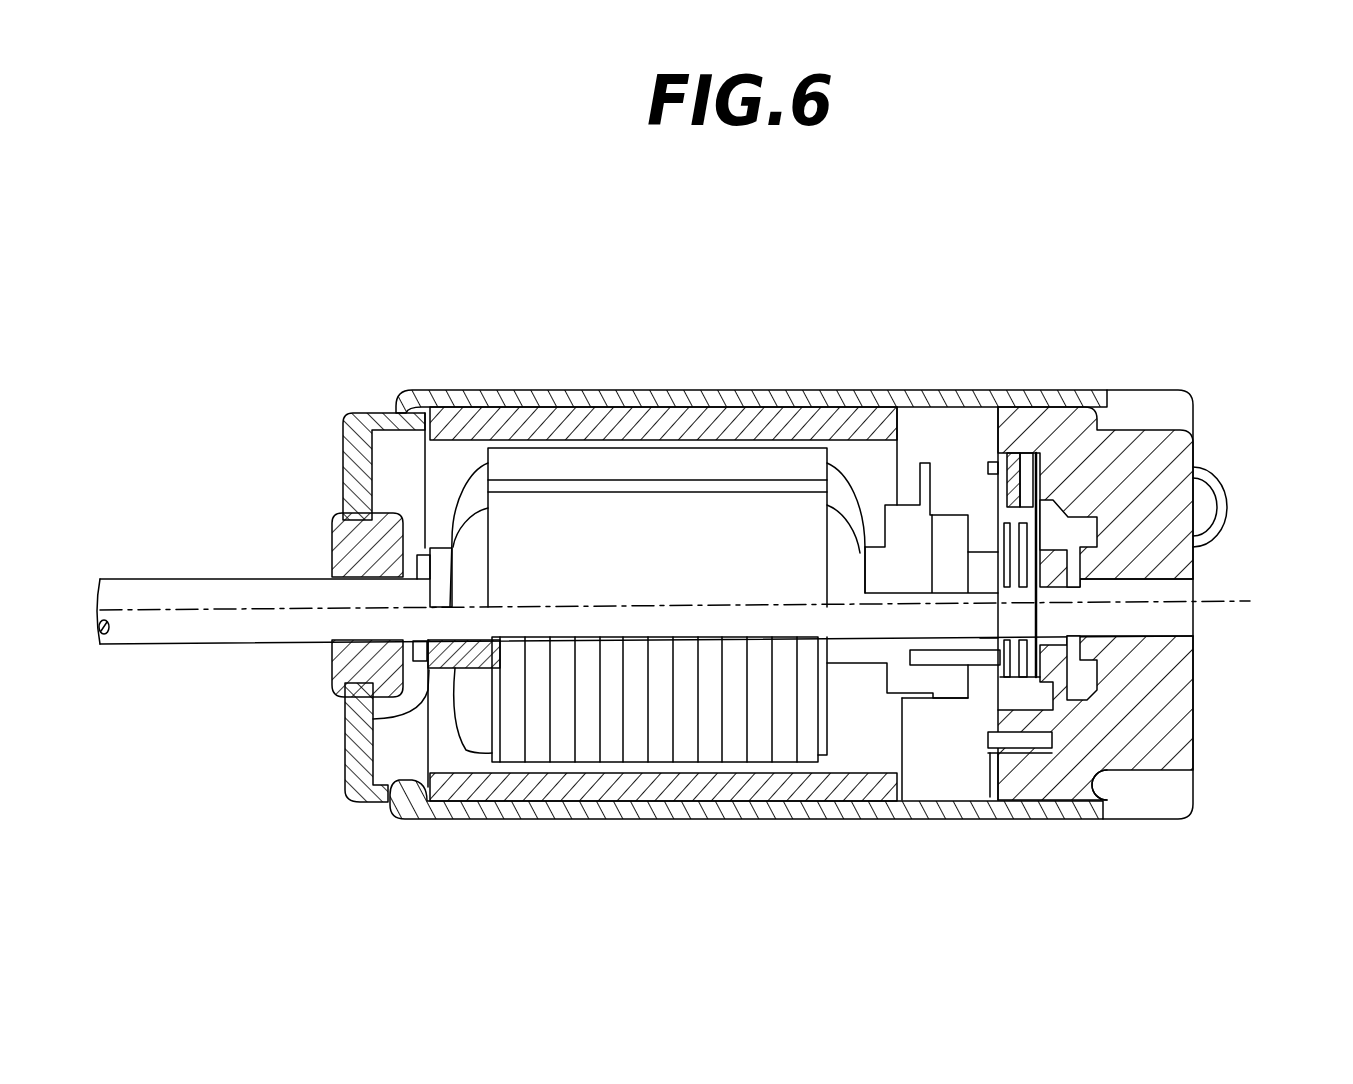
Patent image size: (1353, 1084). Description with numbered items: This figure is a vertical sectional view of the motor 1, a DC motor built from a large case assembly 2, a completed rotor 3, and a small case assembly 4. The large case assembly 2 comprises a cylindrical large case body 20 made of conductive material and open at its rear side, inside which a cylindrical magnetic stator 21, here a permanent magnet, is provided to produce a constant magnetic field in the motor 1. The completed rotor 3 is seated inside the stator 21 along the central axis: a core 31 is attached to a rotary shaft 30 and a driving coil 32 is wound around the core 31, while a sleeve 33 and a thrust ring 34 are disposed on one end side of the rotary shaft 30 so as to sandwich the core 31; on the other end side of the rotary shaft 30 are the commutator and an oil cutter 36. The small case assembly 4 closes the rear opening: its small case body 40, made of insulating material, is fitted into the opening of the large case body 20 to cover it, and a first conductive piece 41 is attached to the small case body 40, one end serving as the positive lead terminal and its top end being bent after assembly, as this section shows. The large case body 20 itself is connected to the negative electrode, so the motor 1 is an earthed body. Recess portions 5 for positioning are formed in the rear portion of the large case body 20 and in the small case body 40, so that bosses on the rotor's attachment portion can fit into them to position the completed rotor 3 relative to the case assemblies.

The motor 1 is at (779, 213).
The large case assembly 2 is at (895, 382).
The large case body 20 is at (842, 392).
The stator 21 is at (729, 409).
The completed rotor 3 is at (445, 745).
The rotary shaft 30 is at (200, 577).
The core 31 is at (590, 525).
The driving coil 32 is at (843, 720).
The sleeve 33 is at (373, 719).
The thrust ring 34 is at (407, 607).
The oil cutter 36 is at (1095, 650).
The small case assembly 4 is at (1212, 578).
The small case body 40 is at (1176, 677).
The first conductive piece 41 is at (1220, 477).
The recess portions for positioning 5 is at (1137, 772).